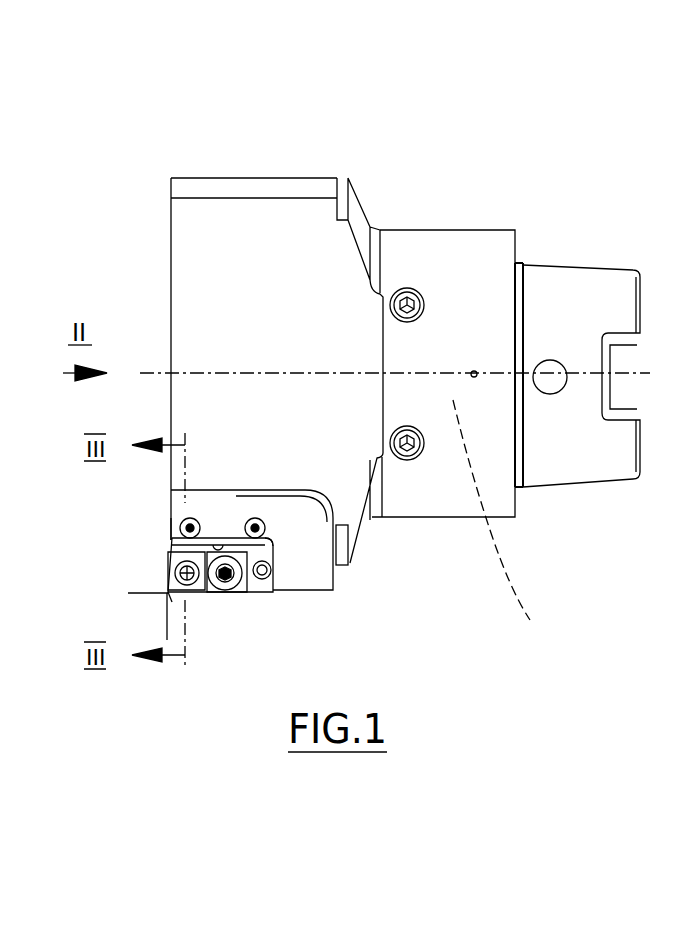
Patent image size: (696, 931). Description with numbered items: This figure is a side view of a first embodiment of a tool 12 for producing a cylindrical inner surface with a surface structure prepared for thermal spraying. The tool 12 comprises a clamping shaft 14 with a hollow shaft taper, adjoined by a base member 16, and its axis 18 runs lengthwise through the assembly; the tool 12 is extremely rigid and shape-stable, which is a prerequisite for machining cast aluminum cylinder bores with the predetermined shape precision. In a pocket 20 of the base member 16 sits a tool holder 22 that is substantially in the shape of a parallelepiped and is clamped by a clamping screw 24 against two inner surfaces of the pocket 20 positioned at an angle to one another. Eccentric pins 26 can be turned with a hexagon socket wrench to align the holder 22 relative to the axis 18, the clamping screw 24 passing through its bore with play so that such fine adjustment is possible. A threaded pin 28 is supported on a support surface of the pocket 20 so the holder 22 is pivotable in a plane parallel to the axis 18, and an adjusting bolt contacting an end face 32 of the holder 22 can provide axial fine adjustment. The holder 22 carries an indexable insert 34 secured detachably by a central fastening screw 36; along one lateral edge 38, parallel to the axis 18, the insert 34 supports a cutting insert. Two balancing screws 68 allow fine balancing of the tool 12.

The tool 12 is at (444, 205).
The clamping shaft 14 is at (570, 290).
The base member 16 is at (496, 230).
The axis 18 is at (508, 522).
The pocket 20 is at (226, 536).
The tool holder 22 is at (269, 592).
The clamping screw 24 is at (226, 583).
The eccentric pins 26 is at (190, 518).
The threaded pin 28 is at (278, 556).
The end face 32 is at (277, 580).
The indexable insert 34 is at (160, 558).
The central fastening screw 36 is at (170, 540).
The lateral edge 38 is at (170, 605).
The balancing screws 68 is at (408, 290).